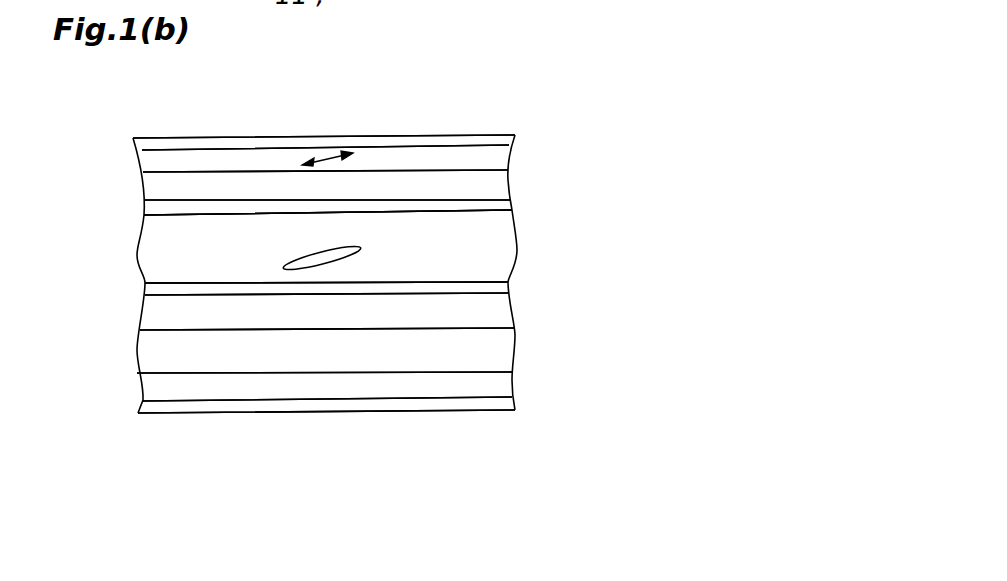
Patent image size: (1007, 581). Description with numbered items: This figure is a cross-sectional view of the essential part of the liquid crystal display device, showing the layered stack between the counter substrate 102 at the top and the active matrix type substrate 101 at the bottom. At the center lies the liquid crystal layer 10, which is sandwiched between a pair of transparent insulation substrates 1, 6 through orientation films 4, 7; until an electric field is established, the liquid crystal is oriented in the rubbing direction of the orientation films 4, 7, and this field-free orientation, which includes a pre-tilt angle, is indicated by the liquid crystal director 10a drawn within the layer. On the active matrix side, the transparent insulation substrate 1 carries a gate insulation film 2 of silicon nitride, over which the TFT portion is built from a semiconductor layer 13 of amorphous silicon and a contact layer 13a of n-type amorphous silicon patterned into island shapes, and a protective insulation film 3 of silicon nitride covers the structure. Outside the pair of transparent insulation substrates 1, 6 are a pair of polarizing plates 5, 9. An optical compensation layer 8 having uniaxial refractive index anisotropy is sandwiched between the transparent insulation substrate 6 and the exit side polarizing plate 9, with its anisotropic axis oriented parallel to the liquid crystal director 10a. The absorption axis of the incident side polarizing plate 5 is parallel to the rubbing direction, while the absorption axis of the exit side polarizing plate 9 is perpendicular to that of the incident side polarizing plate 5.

The transparent insulation substrate 1 is at (502, 385).
The gate insulation film 2 is at (505, 347).
The protective insulation film 3 is at (502, 310).
The orientation film 4 is at (502, 287).
The incident side polarizing plate 5 is at (320, 403).
The transparent insulation substrate 6 is at (502, 183).
The orientation film 7 is at (503, 205).
The optical compensation layer 8 is at (283, 147).
The exit side polarizing plate 9 is at (413, 147).
The liquid crystal layer 10 is at (503, 257).
The liquid crystal director 10a is at (360, 249).
The semiconductor layer 13 is at (556, 25).
The contact layer 13a is at (418, 14).
The active matrix type substrate 101 is at (104, 508).
The counter substrate 102 is at (126, 179).